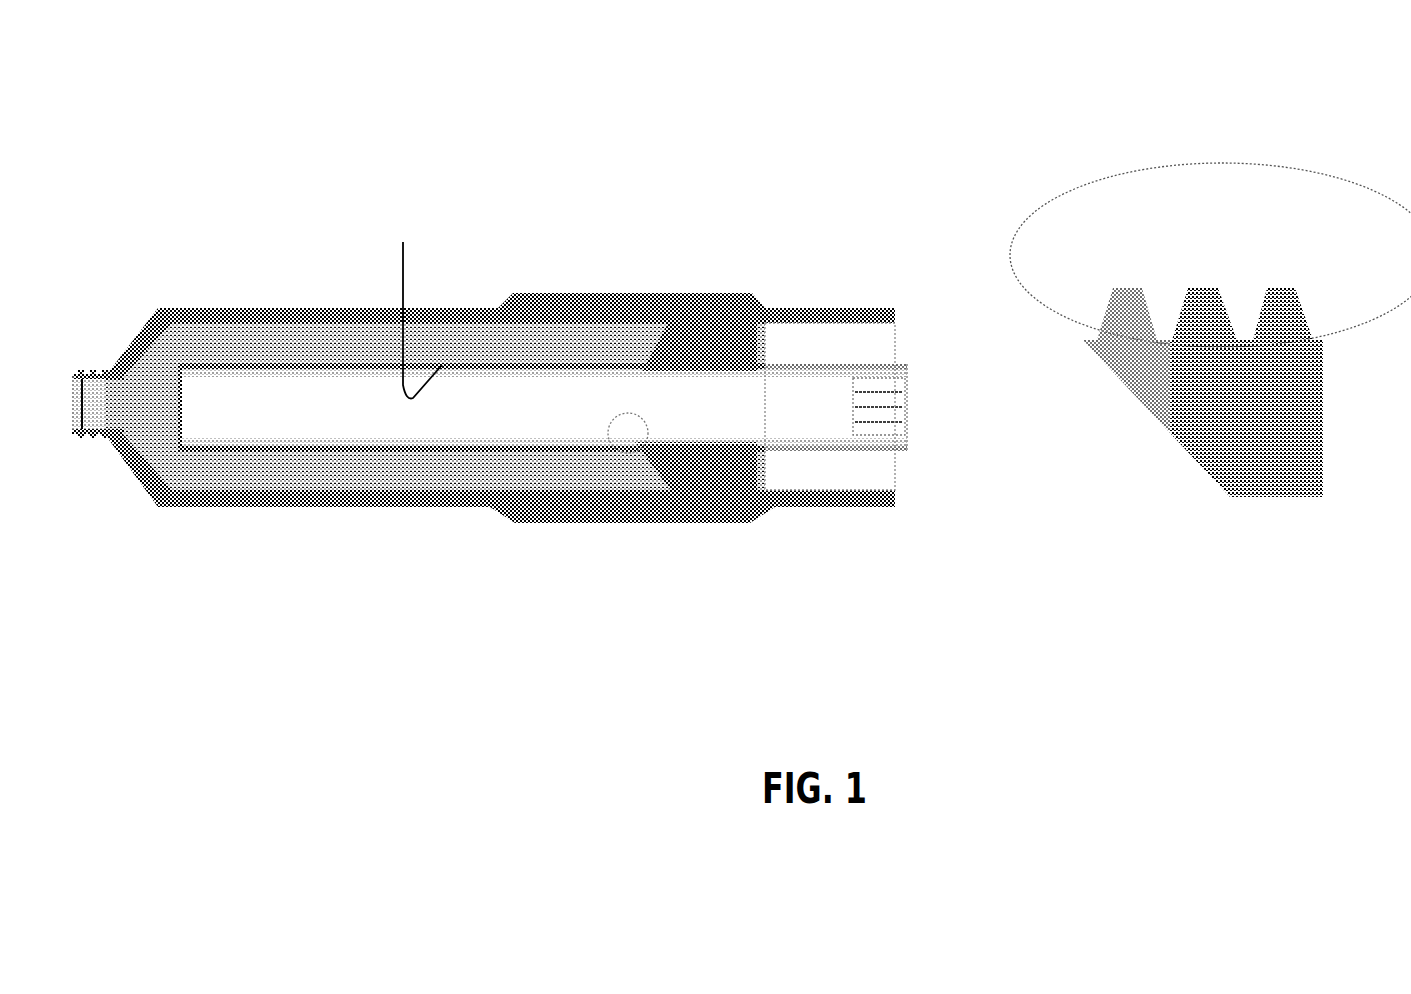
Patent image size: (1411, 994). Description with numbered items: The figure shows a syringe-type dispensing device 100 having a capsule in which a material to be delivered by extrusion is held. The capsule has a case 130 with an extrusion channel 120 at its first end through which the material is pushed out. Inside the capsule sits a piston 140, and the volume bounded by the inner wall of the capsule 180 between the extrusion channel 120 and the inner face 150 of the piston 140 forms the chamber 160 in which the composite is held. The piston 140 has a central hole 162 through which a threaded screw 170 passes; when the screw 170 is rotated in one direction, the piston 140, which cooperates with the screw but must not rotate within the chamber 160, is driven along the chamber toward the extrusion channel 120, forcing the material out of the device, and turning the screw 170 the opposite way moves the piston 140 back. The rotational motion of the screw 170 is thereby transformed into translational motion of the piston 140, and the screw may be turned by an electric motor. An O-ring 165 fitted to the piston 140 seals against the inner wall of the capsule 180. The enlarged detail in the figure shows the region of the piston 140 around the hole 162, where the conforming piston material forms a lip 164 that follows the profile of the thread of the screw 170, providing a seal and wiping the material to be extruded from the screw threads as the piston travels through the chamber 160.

The dispensing device 100 is at (464, 556).
The channel 120 is at (98, 415).
The case 130 is at (302, 313).
The piston 140 is at (678, 337).
The inner face 150 is at (672, 337).
The chamber 160 is at (275, 335).
The central hole 162 is at (713, 372).
The lip 164 is at (659, 428).
The O-ring 165 is at (725, 480).
The screw 170 is at (248, 440).
The inner wall of the capsule 180 is at (414, 306).